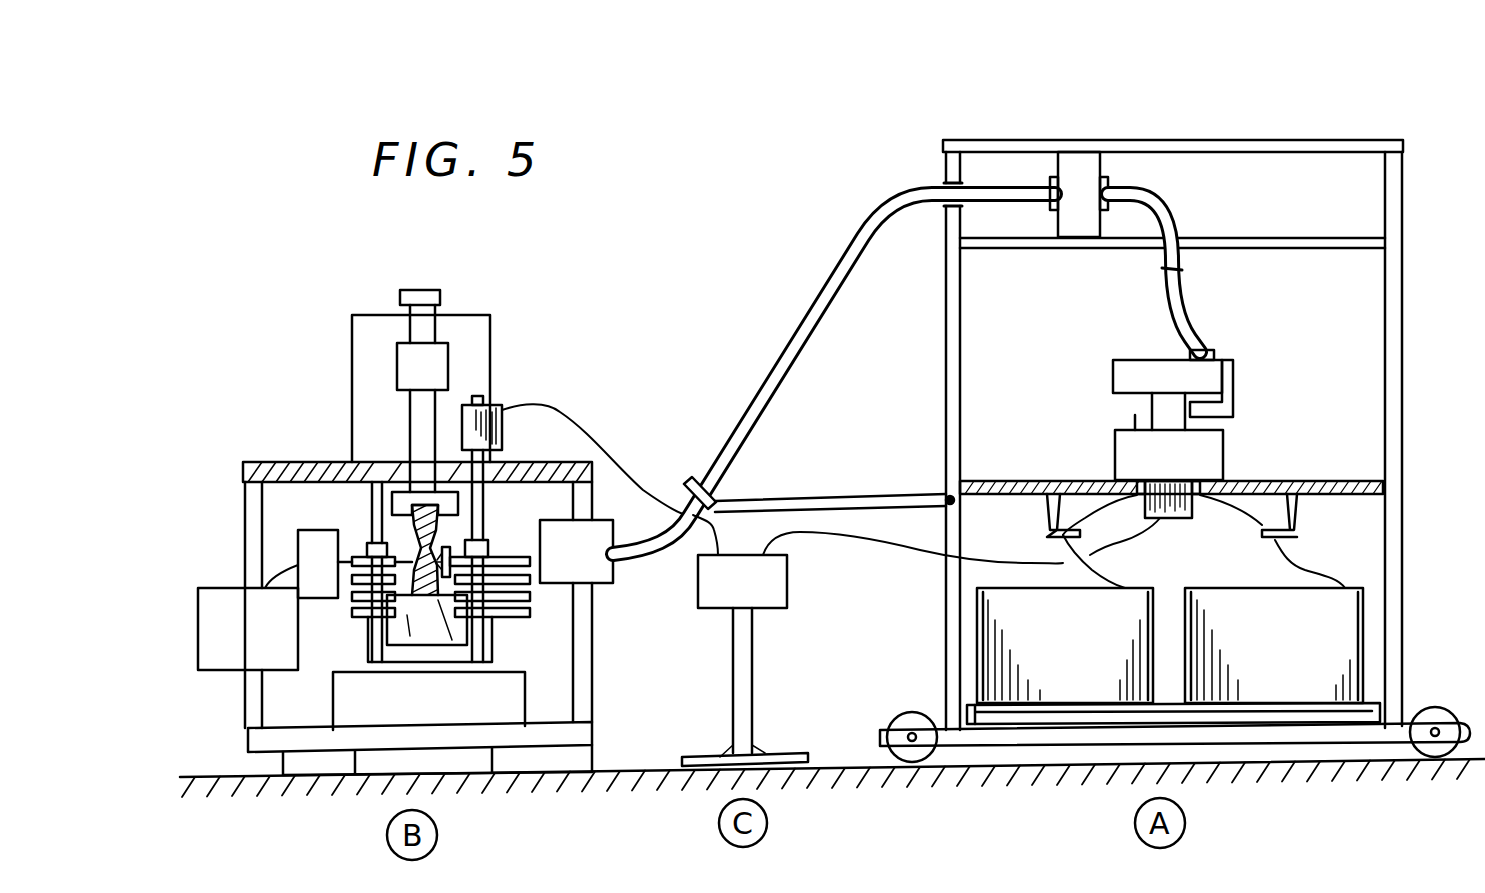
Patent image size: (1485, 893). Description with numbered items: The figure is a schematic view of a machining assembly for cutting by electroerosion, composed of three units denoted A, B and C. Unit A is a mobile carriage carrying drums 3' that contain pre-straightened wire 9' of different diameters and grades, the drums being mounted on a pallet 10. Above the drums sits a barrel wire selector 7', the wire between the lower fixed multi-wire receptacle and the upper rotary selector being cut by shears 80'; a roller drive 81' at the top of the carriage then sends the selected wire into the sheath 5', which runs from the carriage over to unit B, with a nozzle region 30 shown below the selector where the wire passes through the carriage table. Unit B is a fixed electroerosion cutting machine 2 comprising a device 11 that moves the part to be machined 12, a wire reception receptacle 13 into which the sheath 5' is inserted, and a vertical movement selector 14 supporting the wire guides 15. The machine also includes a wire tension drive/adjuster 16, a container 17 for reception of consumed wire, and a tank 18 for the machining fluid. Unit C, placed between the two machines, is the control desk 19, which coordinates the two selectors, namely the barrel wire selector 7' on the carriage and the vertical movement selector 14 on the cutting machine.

The electroerosion cutting machine 2 is at (535, 366).
The device moving the part to be machined 11 is at (412, 372).
The part to be machined 12 is at (412, 533).
The wire reception receptacle 13 is at (598, 568).
The vertical movement selector 14 is at (502, 408).
The wire guides 15 is at (508, 612).
The wire tension drive/adjuster 16 is at (312, 553).
The container for reception of consumed wire 17 is at (225, 647).
The tank for the machining fluid 18 is at (510, 690).
The control desk 19 is at (770, 590).
The sheath 5' is at (834, 368).
The roller drive 81' is at (1076, 157).
The shears 80' is at (1250, 377).
The barrel wire selector 7' is at (1209, 420).
The nozzle 30 is at (1205, 500).
The pre-straightened wire 9' is at (1318, 556).
The drums 3' is at (1213, 645).
The pallet 10 is at (983, 715).